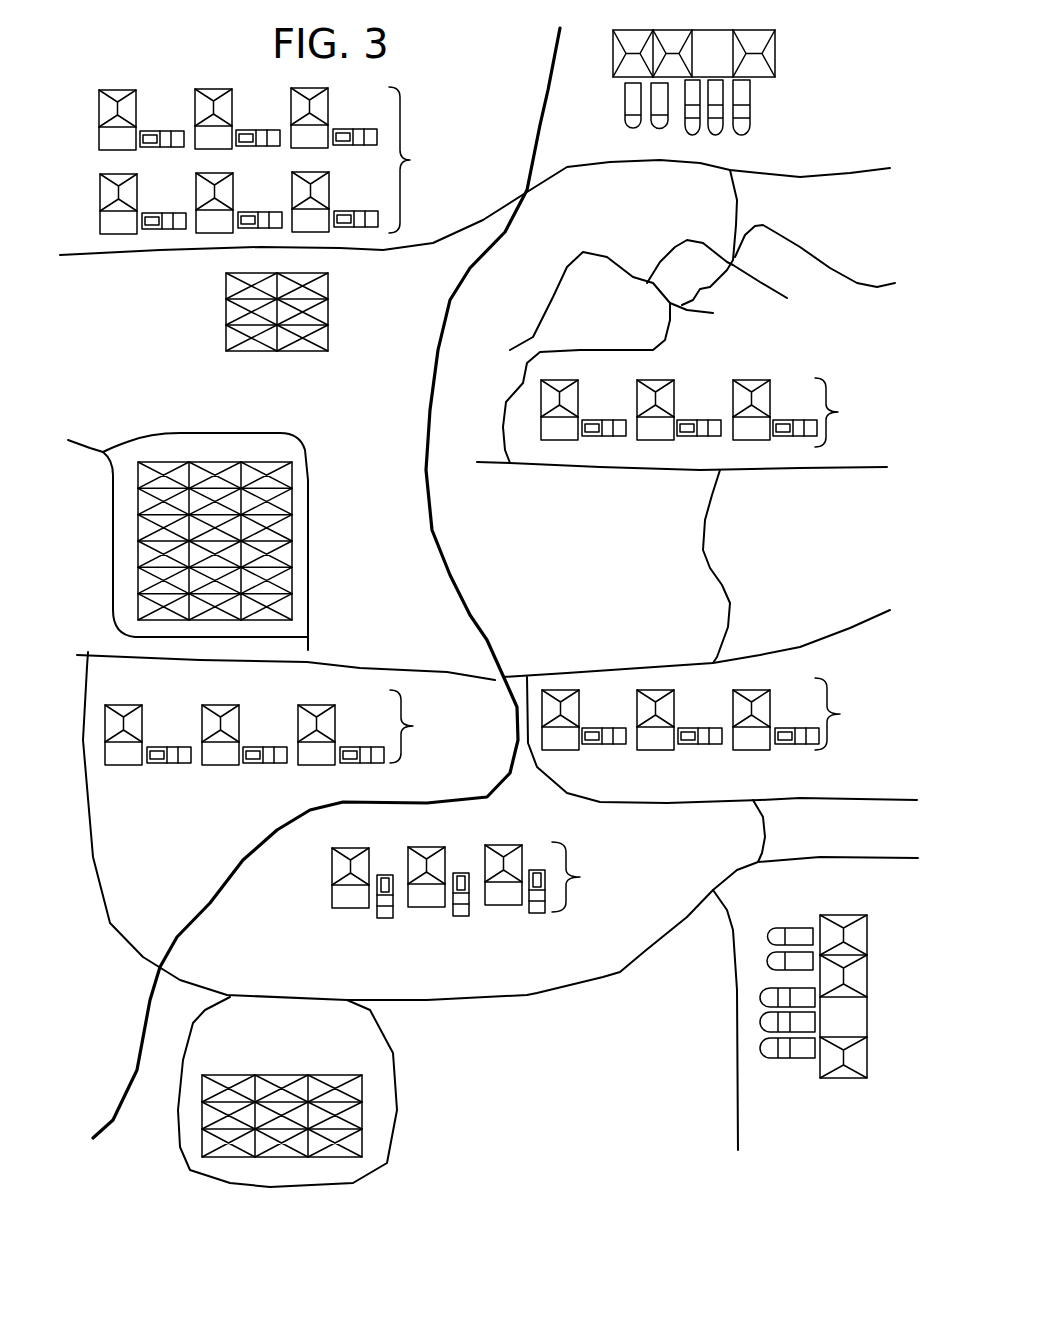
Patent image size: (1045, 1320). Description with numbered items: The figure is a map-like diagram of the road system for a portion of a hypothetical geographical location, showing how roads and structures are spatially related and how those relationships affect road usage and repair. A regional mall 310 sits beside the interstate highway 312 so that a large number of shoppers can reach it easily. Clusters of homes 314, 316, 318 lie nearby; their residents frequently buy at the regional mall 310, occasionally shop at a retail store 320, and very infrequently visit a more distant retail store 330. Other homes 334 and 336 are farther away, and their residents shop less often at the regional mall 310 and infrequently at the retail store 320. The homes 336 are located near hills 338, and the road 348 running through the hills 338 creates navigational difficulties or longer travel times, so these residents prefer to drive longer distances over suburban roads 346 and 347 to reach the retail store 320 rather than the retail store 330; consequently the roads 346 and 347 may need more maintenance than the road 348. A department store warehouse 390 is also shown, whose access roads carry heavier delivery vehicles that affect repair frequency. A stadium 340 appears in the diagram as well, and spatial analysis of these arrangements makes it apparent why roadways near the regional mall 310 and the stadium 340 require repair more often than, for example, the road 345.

The regional mall 310 is at (300, 1070).
The interstate highway 312 is at (203, 903).
The homes 314 is at (638, 916).
The homes 316 is at (465, 763).
The homes 318 is at (895, 751).
The retail store 320 is at (850, 1139).
The retail store 330 is at (850, 80).
The homes 334 is at (477, 195).
The homes 336 is at (898, 448).
The hills 338 is at (613, 320).
The stadium 340 is at (345, 440).
The road 345 is at (763, 843).
The road 346 is at (768, 547).
The road 347 is at (613, 645).
The road 348 is at (733, 212).
The department store warehouse 390 is at (227, 328).